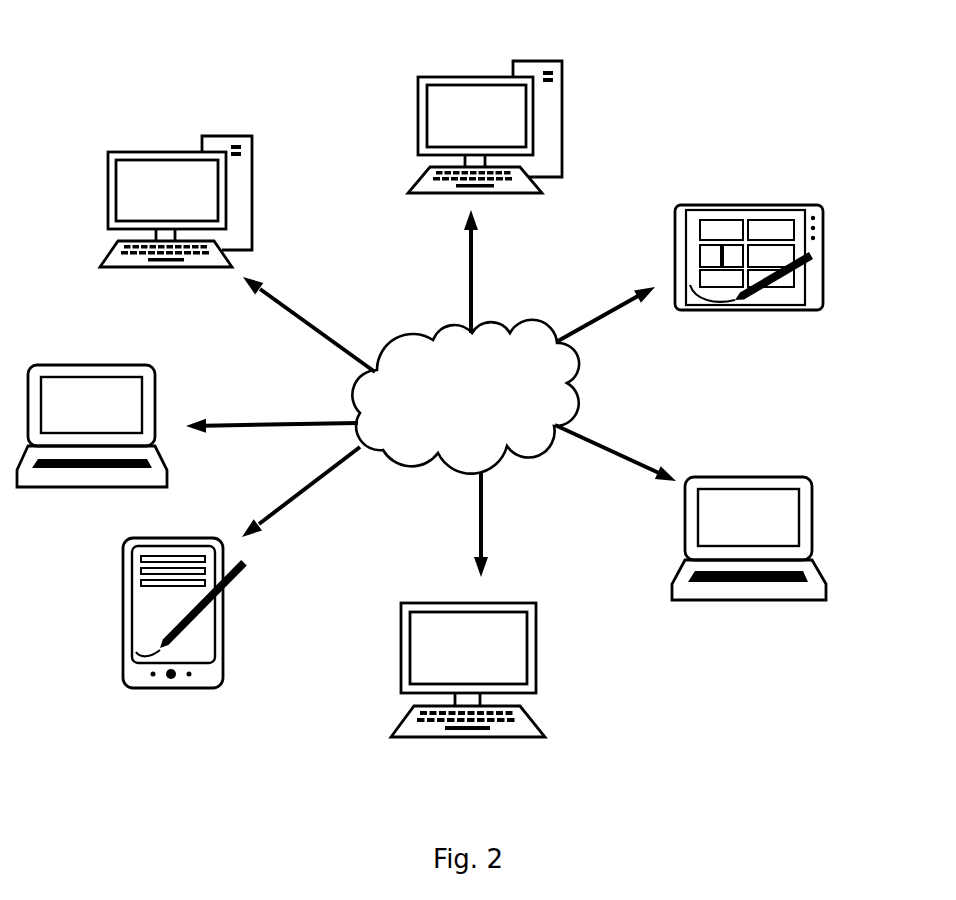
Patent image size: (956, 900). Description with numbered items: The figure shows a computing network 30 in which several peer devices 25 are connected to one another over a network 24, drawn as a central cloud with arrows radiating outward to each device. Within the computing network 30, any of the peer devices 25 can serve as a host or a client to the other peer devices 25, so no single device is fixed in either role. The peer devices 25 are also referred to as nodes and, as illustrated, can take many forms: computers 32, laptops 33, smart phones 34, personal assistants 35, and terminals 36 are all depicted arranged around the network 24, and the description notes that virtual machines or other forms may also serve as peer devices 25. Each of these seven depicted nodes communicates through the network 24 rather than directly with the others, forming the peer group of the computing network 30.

The computing network 30 is at (200, 49).
The network 24 is at (456, 426).
The peer device 25 is at (443, 395).
The computer 32 is at (247, 135).
The laptop 33 is at (733, 483).
The smart phone 34 is at (693, 210).
The personal assistant 35 is at (140, 680).
The terminal 36 is at (523, 619).